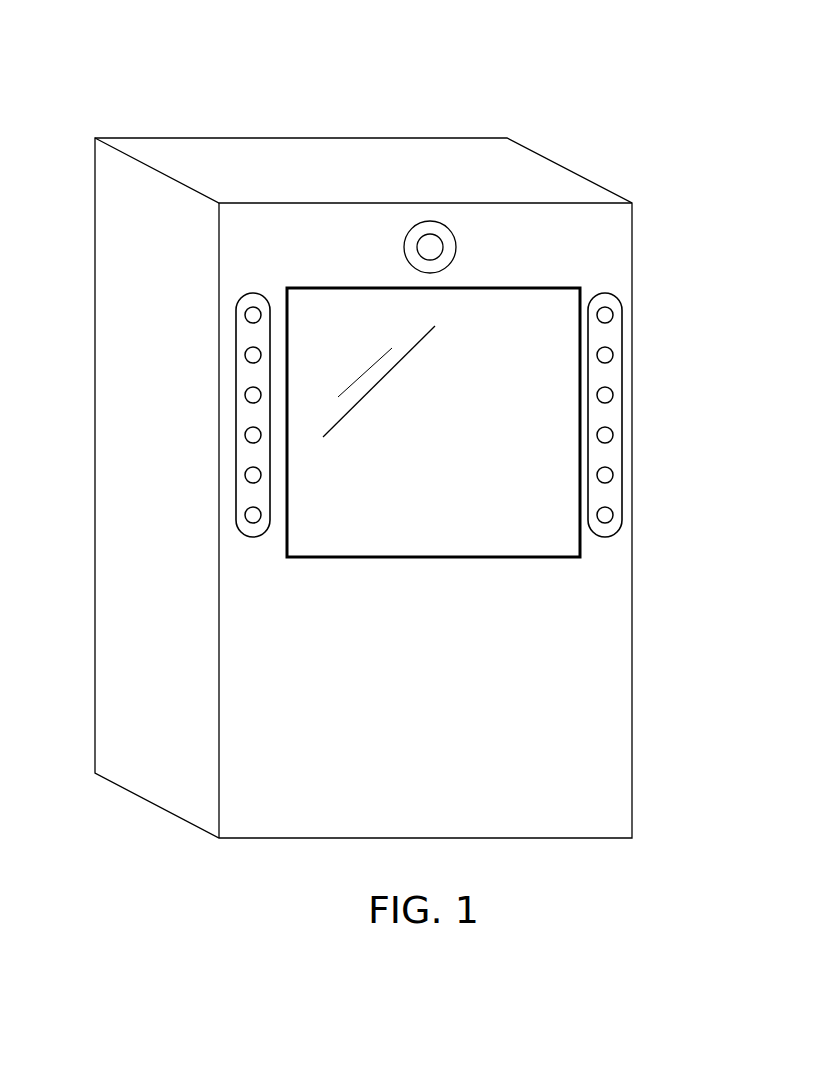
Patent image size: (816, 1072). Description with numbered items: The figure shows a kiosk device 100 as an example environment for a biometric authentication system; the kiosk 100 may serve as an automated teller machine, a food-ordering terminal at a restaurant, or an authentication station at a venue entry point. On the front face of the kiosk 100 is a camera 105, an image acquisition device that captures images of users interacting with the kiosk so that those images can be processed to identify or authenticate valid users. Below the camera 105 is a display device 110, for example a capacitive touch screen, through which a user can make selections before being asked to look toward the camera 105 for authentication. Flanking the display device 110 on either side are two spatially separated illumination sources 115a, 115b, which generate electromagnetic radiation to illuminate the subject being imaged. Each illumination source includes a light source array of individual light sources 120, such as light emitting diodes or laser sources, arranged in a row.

The kiosk device 100 is at (113, 89).
The camera 105 is at (427, 234).
The display device 110 is at (358, 296).
The illumination source 115a is at (236, 463).
The illumination source 115b is at (622, 388).
The light source 120 is at (620, 516).